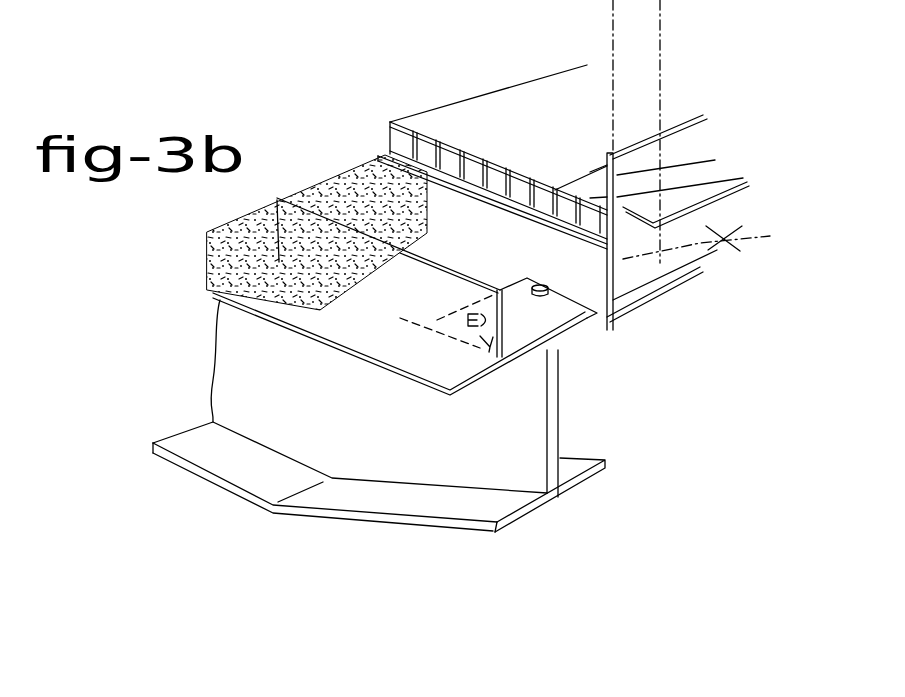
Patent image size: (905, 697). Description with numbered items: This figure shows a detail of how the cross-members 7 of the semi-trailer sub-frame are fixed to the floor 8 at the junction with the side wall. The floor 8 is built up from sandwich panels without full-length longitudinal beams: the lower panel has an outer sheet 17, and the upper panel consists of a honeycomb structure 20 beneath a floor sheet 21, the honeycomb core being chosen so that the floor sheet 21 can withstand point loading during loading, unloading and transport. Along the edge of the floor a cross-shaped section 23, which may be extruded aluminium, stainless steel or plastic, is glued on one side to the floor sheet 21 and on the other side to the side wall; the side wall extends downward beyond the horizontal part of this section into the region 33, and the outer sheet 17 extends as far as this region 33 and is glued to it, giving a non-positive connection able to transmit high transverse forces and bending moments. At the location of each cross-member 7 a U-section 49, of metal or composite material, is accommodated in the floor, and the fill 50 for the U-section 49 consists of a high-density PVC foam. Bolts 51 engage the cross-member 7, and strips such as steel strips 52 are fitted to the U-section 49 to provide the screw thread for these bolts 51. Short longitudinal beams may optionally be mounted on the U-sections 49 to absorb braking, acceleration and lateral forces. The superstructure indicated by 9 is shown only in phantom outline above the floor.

The cross-member 7 is at (243, 392).
The floor 8 is at (530, 118).
The superstructure (phantom) 9 is at (694, 88).
The outer sheet 17 is at (408, 347).
The honeycomb structure 20 is at (397, 146).
The floor sheet 21 is at (437, 132).
The cross-shaped section 23 is at (633, 273).
The region of side wall 33 is at (163, 0).
The U-section 49 is at (593, 288).
The fill 50 is at (343, 177).
The bolt 51 is at (544, 283).
The steel strip 52 is at (542, 308).